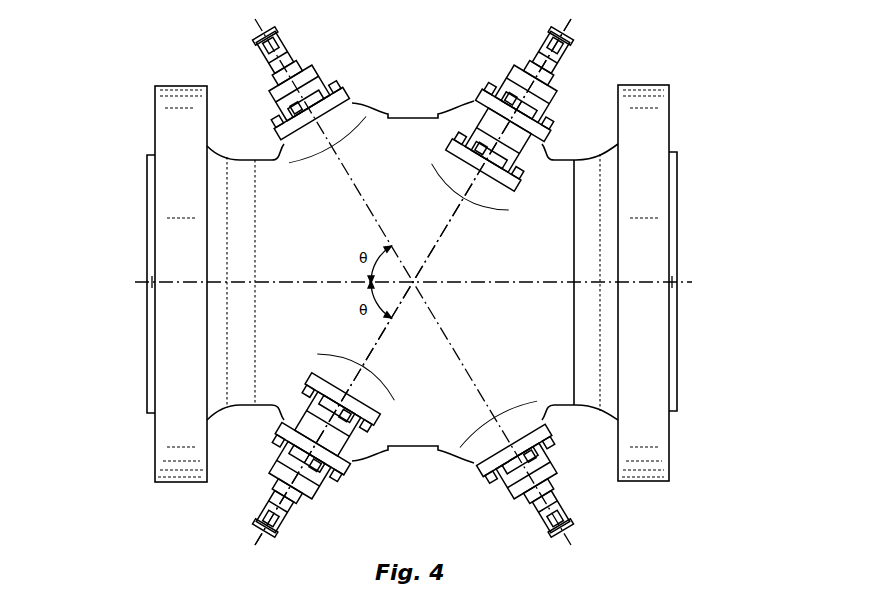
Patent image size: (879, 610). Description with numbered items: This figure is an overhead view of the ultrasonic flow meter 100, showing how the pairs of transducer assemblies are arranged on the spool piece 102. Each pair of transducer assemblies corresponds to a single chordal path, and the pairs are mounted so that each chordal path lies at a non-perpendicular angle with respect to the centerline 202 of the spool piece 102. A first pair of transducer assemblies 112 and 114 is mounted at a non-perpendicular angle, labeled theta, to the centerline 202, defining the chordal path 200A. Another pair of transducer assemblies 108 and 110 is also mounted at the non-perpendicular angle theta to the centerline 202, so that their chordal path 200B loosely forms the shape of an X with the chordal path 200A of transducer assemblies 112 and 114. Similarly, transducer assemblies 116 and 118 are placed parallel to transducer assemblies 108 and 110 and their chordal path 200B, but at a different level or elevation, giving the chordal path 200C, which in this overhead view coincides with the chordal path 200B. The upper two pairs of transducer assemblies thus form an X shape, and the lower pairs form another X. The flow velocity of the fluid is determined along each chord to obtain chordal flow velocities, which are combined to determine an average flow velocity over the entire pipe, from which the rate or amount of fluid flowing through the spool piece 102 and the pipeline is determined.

The ultrasonic flow meter 100 is at (117, 82).
The spool piece 102 is at (415, 114).
The transducer assembly 108 is at (312, 387).
The transducer assembly 110 is at (517, 185).
The transducer assembly 112 is at (507, 492).
The transducer assembly 114 is at (323, 74).
The transducer assembly 116 is at (293, 523).
The transducer assembly 118 is at (537, 42).
The chordal path 200A is at (368, 204).
The chordal path 200B is at (434, 250).
The chordal path 200C is at (424, 262).
The centerline 202 is at (502, 287).